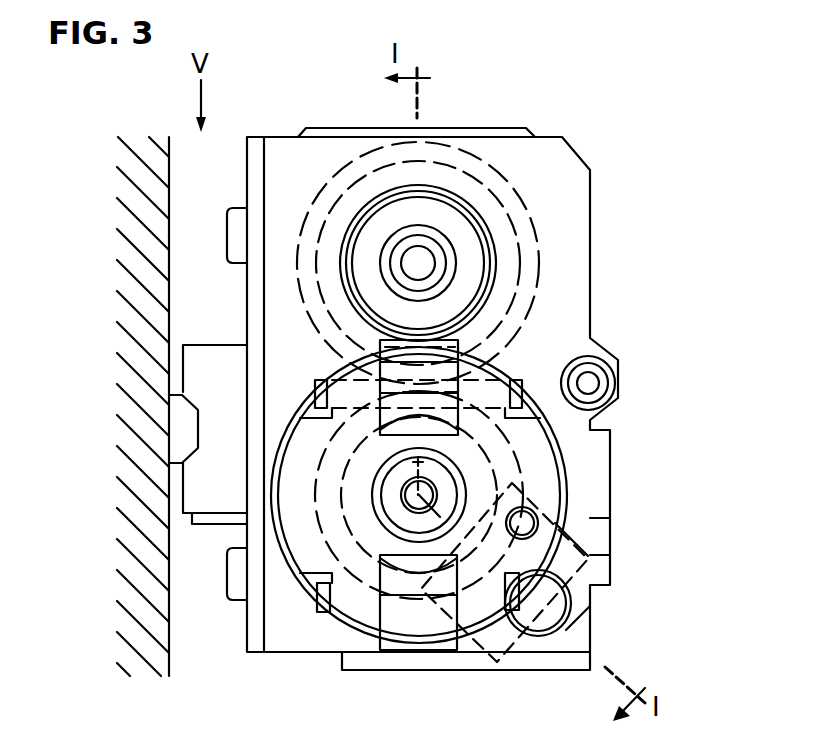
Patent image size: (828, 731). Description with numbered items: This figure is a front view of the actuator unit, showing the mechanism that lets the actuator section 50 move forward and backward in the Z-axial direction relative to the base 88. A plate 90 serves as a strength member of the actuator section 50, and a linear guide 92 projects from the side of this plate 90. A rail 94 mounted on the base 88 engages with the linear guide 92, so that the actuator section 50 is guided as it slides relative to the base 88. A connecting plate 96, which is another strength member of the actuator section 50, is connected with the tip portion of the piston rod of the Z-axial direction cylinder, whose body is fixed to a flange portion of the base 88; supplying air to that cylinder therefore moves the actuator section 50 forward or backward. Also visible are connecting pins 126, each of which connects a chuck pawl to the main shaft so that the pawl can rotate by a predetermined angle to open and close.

The actuator section 50 is at (615, 197).
The base 88 is at (148, 221).
The plate 90 is at (258, 170).
The linear guide 92 is at (208, 356).
The rail 94 is at (183, 428).
The connecting plate 96 is at (216, 515).
The connecting pin 126 is at (316, 394).